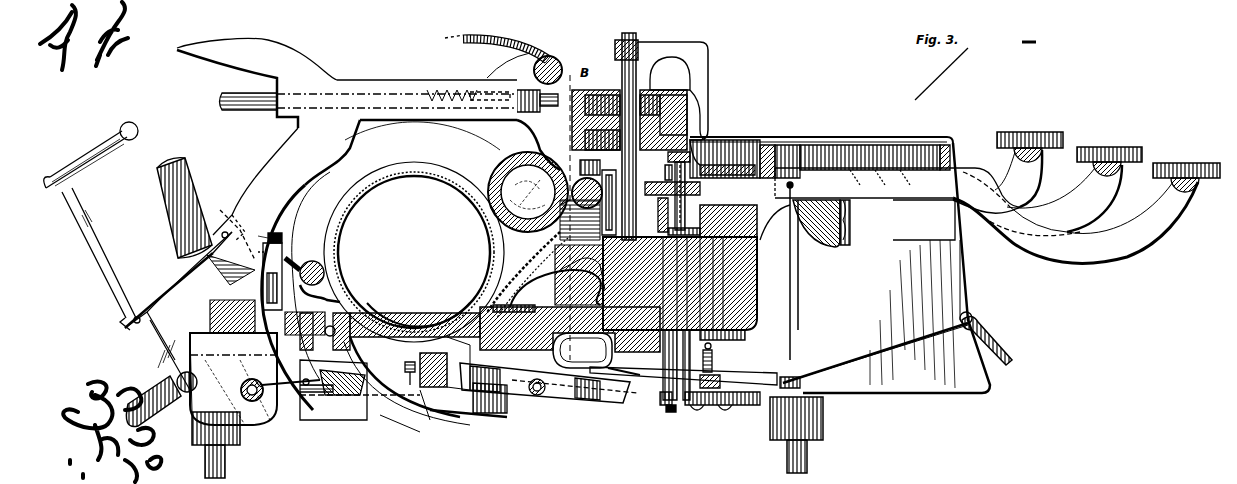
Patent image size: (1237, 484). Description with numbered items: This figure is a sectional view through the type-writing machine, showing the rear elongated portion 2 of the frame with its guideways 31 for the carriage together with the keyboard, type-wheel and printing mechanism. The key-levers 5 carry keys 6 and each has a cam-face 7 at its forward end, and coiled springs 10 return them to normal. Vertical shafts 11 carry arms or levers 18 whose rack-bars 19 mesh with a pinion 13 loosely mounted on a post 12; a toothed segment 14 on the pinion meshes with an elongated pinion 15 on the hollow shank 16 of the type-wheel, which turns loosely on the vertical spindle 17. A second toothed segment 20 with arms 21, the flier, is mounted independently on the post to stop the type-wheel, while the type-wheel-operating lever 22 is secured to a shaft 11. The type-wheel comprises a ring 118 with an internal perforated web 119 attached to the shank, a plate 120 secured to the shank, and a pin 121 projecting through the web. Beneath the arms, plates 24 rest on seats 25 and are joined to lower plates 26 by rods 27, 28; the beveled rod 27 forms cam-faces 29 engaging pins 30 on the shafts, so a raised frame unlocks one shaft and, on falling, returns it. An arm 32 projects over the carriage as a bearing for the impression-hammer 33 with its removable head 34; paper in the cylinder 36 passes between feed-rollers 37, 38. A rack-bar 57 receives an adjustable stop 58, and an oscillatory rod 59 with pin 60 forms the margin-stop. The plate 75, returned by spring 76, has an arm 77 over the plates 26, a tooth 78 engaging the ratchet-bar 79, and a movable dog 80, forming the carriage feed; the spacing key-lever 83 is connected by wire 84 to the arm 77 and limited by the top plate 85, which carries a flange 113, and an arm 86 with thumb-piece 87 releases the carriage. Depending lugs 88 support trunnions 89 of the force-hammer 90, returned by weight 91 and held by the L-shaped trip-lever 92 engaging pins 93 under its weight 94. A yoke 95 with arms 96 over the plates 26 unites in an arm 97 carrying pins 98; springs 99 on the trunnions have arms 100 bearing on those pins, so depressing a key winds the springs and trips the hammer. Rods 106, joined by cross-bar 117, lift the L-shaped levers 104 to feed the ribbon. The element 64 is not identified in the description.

The rear elongated portion 2 is at (556, 282).
The key-levers 5 is at (1084, 192).
The keys 6 is at (1108, 152).
The cam-face 7 is at (813, 255).
The coiled springs 10 is at (853, 233).
The vertical shafts 11 is at (722, 337).
The post 12 is at (704, 135).
The pinion 13 is at (668, 157).
The toothed segment 14 is at (666, 196).
The elongated pinion 15 is at (658, 215).
The hollow shank 16 is at (625, 160).
The vertical spindle 17 is at (636, 136).
The arms or levers 18 is at (762, 142).
The rack-bars 19 is at (735, 140).
The toothed segment 20 is at (672, 198).
The arms 21 is at (752, 148).
The type-wheel-operating lever 22 is at (777, 147).
The plates 24 is at (740, 248).
The seats 25 is at (775, 265).
The plates 26 is at (782, 425).
The rod 27 is at (670, 352).
The rod 28 is at (735, 375).
The cam-faces 29 is at (735, 358).
The pins 30 is at (740, 350).
The guideways 31 is at (528, 308).
The arm 32 is at (258, 194).
The impression-hammer 33 is at (347, 84).
The cushion or head 34 is at (503, 80).
The cylinder 36 is at (447, 175).
The feed-roller 37 is at (581, 181).
The feed-roller 38 is at (508, 162).
The rack-bar 57 is at (282, 297).
The adjustable stop 58 is at (279, 231).
The oscillatory rod 59 is at (330, 275).
The pin 60 is at (295, 255).
The screw 64 is at (405, 367).
The plate 75 is at (558, 410).
The spring 76 is at (582, 350).
The arm 77 is at (717, 395).
The tooth 78 is at (445, 363).
The ratchet-bar 79 is at (432, 390).
The movable dog 80 is at (480, 413).
The key-lever 83 is at (1095, 260).
The wire 84 is at (793, 298).
The top plate 85 is at (875, 144).
The arm 86 is at (886, 268).
The thumb-piece 87 is at (987, 338).
The depending lugs 88 is at (250, 425).
The trunnions 89 is at (252, 382).
The force-hammer 90 is at (91, 155).
The weight 91 is at (161, 405).
The L-shaped trip-lever 92 is at (190, 311).
The pins 93 is at (136, 330).
The weight 94 is at (185, 208).
The yoke 95 is at (548, 383).
The arms 96 is at (612, 375).
The arm 97 is at (350, 390).
The pins 98 is at (322, 392).
The springs 99 is at (267, 398).
The arms 100 is at (327, 395).
The L-shaped levers 104 is at (672, 233).
The vertically-movable rods 106 is at (663, 392).
The flange 113 is at (703, 88).
The cross-bar 117 is at (672, 408).
The ring 118 is at (703, 108).
The internal perforated web 119 is at (672, 115).
The plate 120 is at (613, 92).
The pin 121 is at (670, 81).